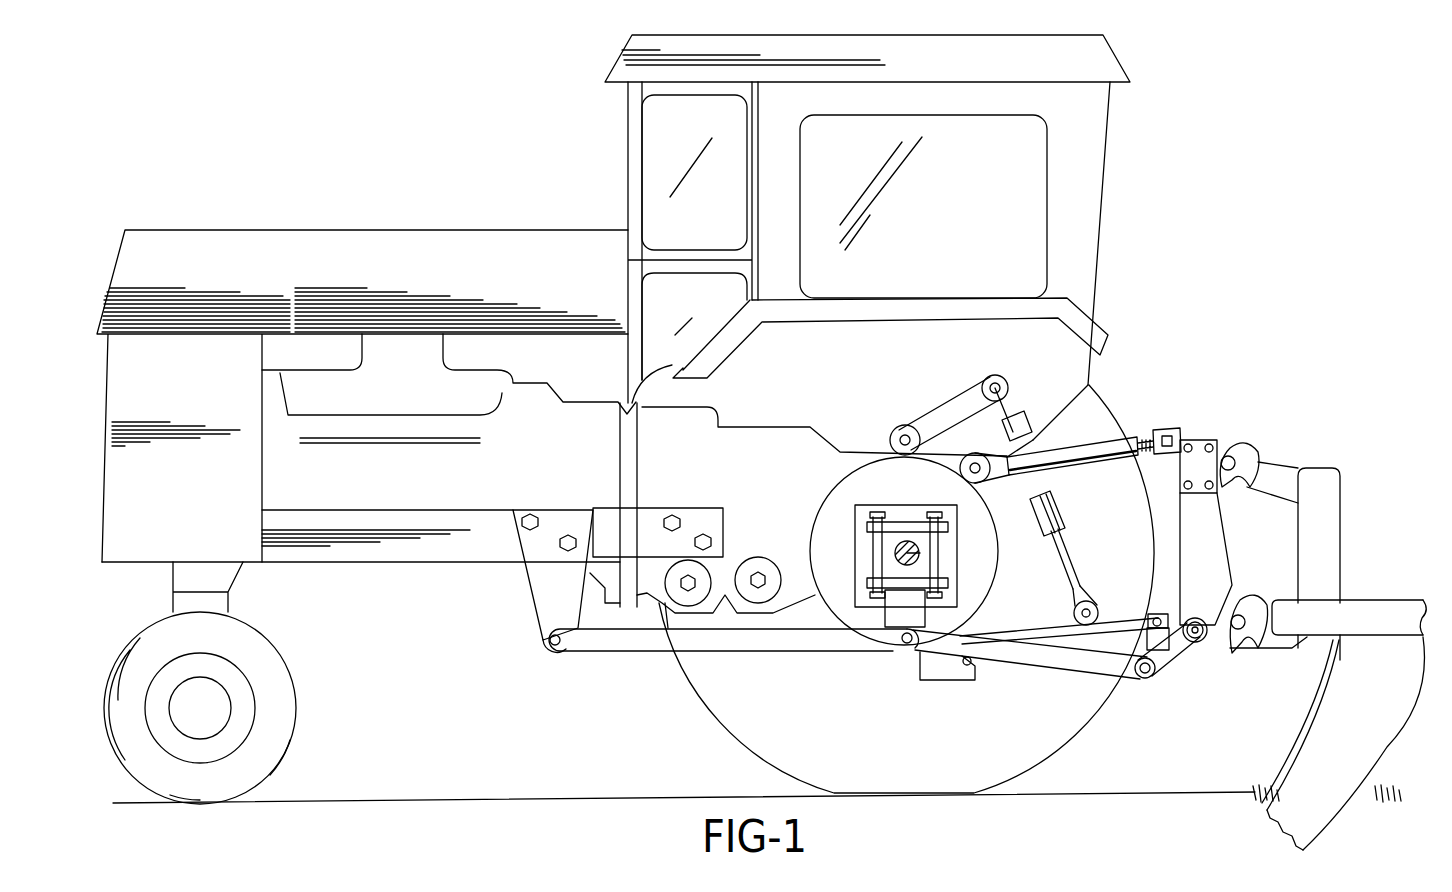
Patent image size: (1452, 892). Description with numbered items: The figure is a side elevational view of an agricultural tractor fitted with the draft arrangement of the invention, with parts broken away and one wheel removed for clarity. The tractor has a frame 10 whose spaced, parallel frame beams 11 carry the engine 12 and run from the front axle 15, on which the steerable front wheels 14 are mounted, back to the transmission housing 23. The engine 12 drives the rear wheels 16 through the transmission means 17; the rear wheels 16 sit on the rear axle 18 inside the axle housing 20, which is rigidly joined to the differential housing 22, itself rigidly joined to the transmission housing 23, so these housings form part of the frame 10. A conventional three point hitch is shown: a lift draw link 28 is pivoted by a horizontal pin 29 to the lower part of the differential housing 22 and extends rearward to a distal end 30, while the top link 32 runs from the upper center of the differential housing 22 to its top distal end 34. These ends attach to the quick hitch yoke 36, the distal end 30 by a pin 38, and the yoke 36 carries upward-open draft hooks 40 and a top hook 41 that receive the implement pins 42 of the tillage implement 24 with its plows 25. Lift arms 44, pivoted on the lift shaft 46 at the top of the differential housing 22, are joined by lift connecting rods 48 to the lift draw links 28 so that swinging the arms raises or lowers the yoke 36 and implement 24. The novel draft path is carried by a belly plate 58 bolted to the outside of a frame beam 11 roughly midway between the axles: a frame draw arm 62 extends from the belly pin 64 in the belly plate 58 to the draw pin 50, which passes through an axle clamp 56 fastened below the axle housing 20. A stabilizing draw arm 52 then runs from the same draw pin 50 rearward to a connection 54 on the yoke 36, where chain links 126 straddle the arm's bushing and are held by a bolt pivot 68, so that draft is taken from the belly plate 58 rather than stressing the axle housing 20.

The frame 10 is at (466, 564).
The frame beams 11 is at (310, 563).
The engine 12 is at (408, 400).
The front wheels 14 is at (290, 665).
The front axle 15 is at (173, 592).
The rear wheels 16 is at (793, 695).
The transmission means 17 is at (784, 434).
The rear axle 18 is at (920, 556).
The axle housing 20 is at (895, 516).
The differential housing 22 is at (834, 508).
The transmission housing 23 is at (696, 476).
The tillage implement 24 is at (1398, 578).
The plows 25 is at (1378, 728).
The lift draw links 28 is at (1010, 662).
The pins 29 is at (960, 676).
The distal end 30 is at (1170, 598).
The top link 32 is at (1110, 462).
The top distal end 34 is at (1184, 432).
The quick hitch yoke 36 is at (1220, 580).
The pin 38 is at (1208, 648).
The draft hooks 40 is at (1252, 655).
The top hook 41 is at (1262, 458).
The implement pins 42 is at (1233, 442).
The lift arms 44 is at (952, 408).
The lift shaft 46 is at (892, 434).
The lift connecting rod 48 is at (1065, 516).
The draw pin 50 is at (902, 644).
The stabilizing draw arm 52 is at (1040, 634).
The connection 54 is at (1218, 602).
The axle clamp 56 is at (912, 512).
The belly plate 58 is at (566, 600).
The frame draw arm 62 is at (612, 648).
The belly pin 64 is at (546, 645).
The bolt pivot 68 is at (1150, 680).
The chain links 126 is at (1218, 690).